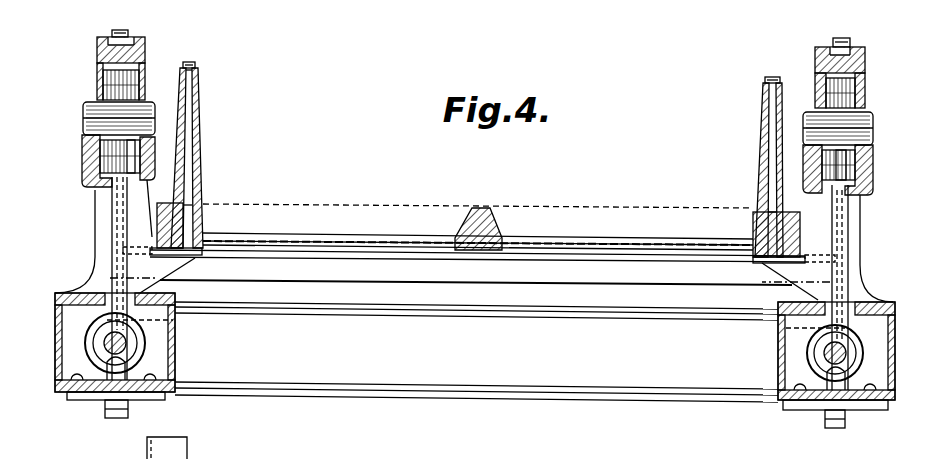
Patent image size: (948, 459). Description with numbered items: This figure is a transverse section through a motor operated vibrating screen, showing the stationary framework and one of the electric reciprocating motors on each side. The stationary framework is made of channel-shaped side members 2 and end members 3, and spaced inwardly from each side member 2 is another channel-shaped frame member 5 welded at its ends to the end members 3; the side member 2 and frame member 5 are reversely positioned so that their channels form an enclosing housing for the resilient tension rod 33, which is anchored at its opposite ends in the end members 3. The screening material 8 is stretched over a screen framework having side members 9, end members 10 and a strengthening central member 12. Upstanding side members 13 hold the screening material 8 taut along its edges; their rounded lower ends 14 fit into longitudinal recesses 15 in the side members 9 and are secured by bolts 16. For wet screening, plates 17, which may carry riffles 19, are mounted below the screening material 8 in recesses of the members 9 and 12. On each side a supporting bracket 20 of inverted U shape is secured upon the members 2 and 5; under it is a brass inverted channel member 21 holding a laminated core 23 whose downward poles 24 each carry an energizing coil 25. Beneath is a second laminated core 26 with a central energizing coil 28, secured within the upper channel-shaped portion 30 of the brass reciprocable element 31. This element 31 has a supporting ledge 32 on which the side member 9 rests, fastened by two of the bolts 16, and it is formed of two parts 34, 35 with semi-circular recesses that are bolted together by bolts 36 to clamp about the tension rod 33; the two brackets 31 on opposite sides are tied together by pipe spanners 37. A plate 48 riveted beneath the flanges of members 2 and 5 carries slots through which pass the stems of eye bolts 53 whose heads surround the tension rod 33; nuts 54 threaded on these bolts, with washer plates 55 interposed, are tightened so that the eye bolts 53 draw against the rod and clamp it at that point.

The side member 2 is at (56, 335).
The end member 3 is at (538, 382).
The frame member 5 is at (175, 362).
The screening material 8 is at (325, 204).
The side member 9 is at (205, 222).
The end member 10 is at (477, 220).
The central member 12 is at (478, 211).
The upstanding side member 13 is at (200, 130).
The lower end 14 is at (183, 203).
The longitudinal recess 15 is at (186, 220).
The bolt 16 is at (190, 91).
The plate 17 is at (355, 241).
The riffle 19 is at (264, 233).
The supporting bracket 20 is at (133, 41).
The inverted channel shaped member 21 is at (98, 70).
The laminated core 23 is at (102, 87).
The pole 24 is at (83, 126).
The energizing coil 25 is at (85, 109).
The laminated core 26 is at (125, 155).
The energizing coil 28 is at (88, 175).
The upper channel shaped portion 30 is at (100, 154).
The reciprocable element 31 is at (112, 212).
The supporting ledge 32 is at (165, 253).
The tension rod 33 is at (109, 347).
The bracket part 34 is at (108, 252).
The bracket part 35 is at (131, 230).
The bolt 36 is at (141, 362).
The spanner 37 is at (370, 276).
The plate 48 is at (95, 400).
The eye bolt 53 is at (100, 351).
The nut 54 is at (128, 408).
The washer plate 55 is at (98, 402).